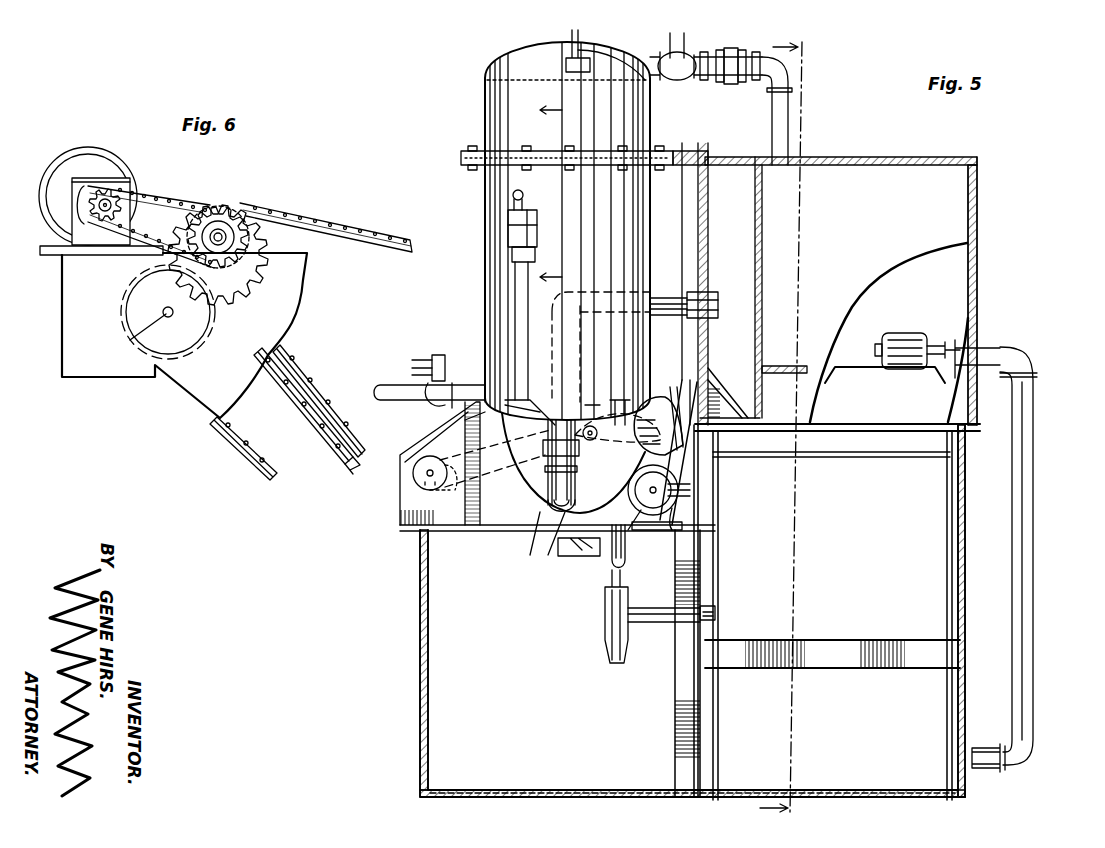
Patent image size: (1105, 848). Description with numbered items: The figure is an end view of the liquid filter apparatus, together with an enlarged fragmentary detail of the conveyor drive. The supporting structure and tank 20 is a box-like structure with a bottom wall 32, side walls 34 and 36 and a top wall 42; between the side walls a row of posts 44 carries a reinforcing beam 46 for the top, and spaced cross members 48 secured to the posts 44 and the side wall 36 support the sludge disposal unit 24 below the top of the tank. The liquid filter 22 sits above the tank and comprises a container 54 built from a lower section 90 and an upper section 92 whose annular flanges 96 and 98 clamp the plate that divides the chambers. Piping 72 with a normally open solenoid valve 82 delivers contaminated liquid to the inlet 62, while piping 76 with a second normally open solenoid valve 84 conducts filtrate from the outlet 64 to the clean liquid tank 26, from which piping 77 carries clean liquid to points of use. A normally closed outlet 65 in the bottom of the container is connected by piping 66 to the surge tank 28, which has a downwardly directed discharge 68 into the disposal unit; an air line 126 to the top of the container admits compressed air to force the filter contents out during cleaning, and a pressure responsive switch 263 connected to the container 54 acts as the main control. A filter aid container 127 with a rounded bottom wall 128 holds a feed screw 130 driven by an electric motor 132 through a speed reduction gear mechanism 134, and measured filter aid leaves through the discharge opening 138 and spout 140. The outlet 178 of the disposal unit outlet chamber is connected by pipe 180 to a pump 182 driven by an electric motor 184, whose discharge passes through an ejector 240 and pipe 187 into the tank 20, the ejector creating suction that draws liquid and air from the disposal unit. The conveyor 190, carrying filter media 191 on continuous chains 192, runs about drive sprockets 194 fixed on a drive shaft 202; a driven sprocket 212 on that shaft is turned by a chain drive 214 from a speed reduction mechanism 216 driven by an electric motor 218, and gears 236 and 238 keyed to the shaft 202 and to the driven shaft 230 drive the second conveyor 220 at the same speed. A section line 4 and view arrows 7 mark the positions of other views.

In FIG. 5, the section line 4- 4 is at (794, 431).
In FIG. 5, the view direction arrows 7 is at (558, 194).
In FIG. 5, the supporting structure and tank 20 is at (412, 668).
In FIG. 5, the liquid filter 22 is at (476, 122).
In FIG. 5, the sludge disposal unit 24 is at (948, 500).
In FIG. 5, the clean liquid tank 26 is at (960, 215).
In FIG. 5, the surge tank 28 is at (752, 240).
In FIG. 5, the bottom wall 32 is at (598, 790).
In FIG. 5, the side wall 34 is at (418, 622).
In FIG. 5, the side wall 36 is at (968, 615).
In FIG. 5, the top wall 42 is at (523, 555).
In FIG. 5, the upright load supporting posts 44 is at (676, 690).
In FIG. 5, the reinforcing beam 46 is at (712, 555).
In FIG. 5, the cross members 48 is at (840, 662).
In FIG. 5, the filter container 54 is at (484, 295).
In FIG. 5, the inlet 62 is at (478, 385).
In FIG. 5, the outlet 64 is at (622, 72).
In FIG. 5, the normally closed outlet 65 is at (556, 420).
In FIG. 5, the piping 66 is at (672, 278).
In FIG. 5, the downwardly directed discharge 68 is at (745, 380).
In FIG. 5, the piping 72 is at (404, 390).
In FIG. 5, the piping 76 is at (770, 135).
In FIG. 5, the piping 77 is at (1030, 660).
In FIG. 5, the normally open solenoid valve 82 is at (412, 372).
In FIG. 5, the second normally open solenoid valve 84 is at (682, 80).
In FIG. 5, the lower container section 90 is at (485, 235).
In FIG. 5, the upper container section 92 is at (485, 95).
In FIG. 5, the annular flange 96 is at (462, 158).
In FIG. 5, the annular flange 98 is at (466, 168).
In FIG. 5, the air line 126 is at (568, 38).
In FIG. 5, the filter aid container 127 is at (700, 120).
In FIG. 5, the rounded bottom wall 128 is at (546, 556).
In FIG. 5, the feed screw 130 is at (660, 402).
In FIG. 5, the electric motor 132 is at (412, 488).
In FIG. 5, the speed reduction gear mechanism 134 is at (465, 508).
In FIG. 5, the filter aid discharge opening 138 is at (518, 500).
In FIG. 5, the spout 140 is at (574, 560).
In FIG. 5, the outlet 178 is at (716, 616).
In FIG. 5, the pipe 180 is at (652, 612).
In FIG. 5, the pump 182 is at (678, 482).
In FIG. 5, the electric motor 184 is at (692, 502).
In FIG. 5, the pipe 187 is at (622, 565).
In FIG. 6, the conveyor 190 is at (292, 356).
In FIG. 6, the filter media 191 is at (360, 460).
In FIG. 6, the chains 192 is at (338, 238).
In FIG. 6, the drive sprockets 194 is at (240, 225).
In FIG. 6, the drive shaft 202 is at (222, 243).
In FIG. 6, the driven sprocket 212 is at (226, 244).
In FIG. 6, the chain drive 214 is at (165, 196).
In FIG. 6, the speed reduction mechanism 216 is at (95, 180).
In FIG. 5, the electric motor 218 is at (908, 326).
In FIG. 6, the electric motor 218 is at (66, 168).
In FIG. 6, the conveyor 220 is at (238, 462).
In FIG. 6, the driven shaft 230 is at (130, 340).
In FIG. 6, the gear 236 is at (232, 300).
In FIG. 6, the gear 238 is at (190, 328).
In FIG. 5, the ejector or aspirator 240 is at (612, 635).
In FIG. 5, the pressure responsive switch 263 is at (510, 240).